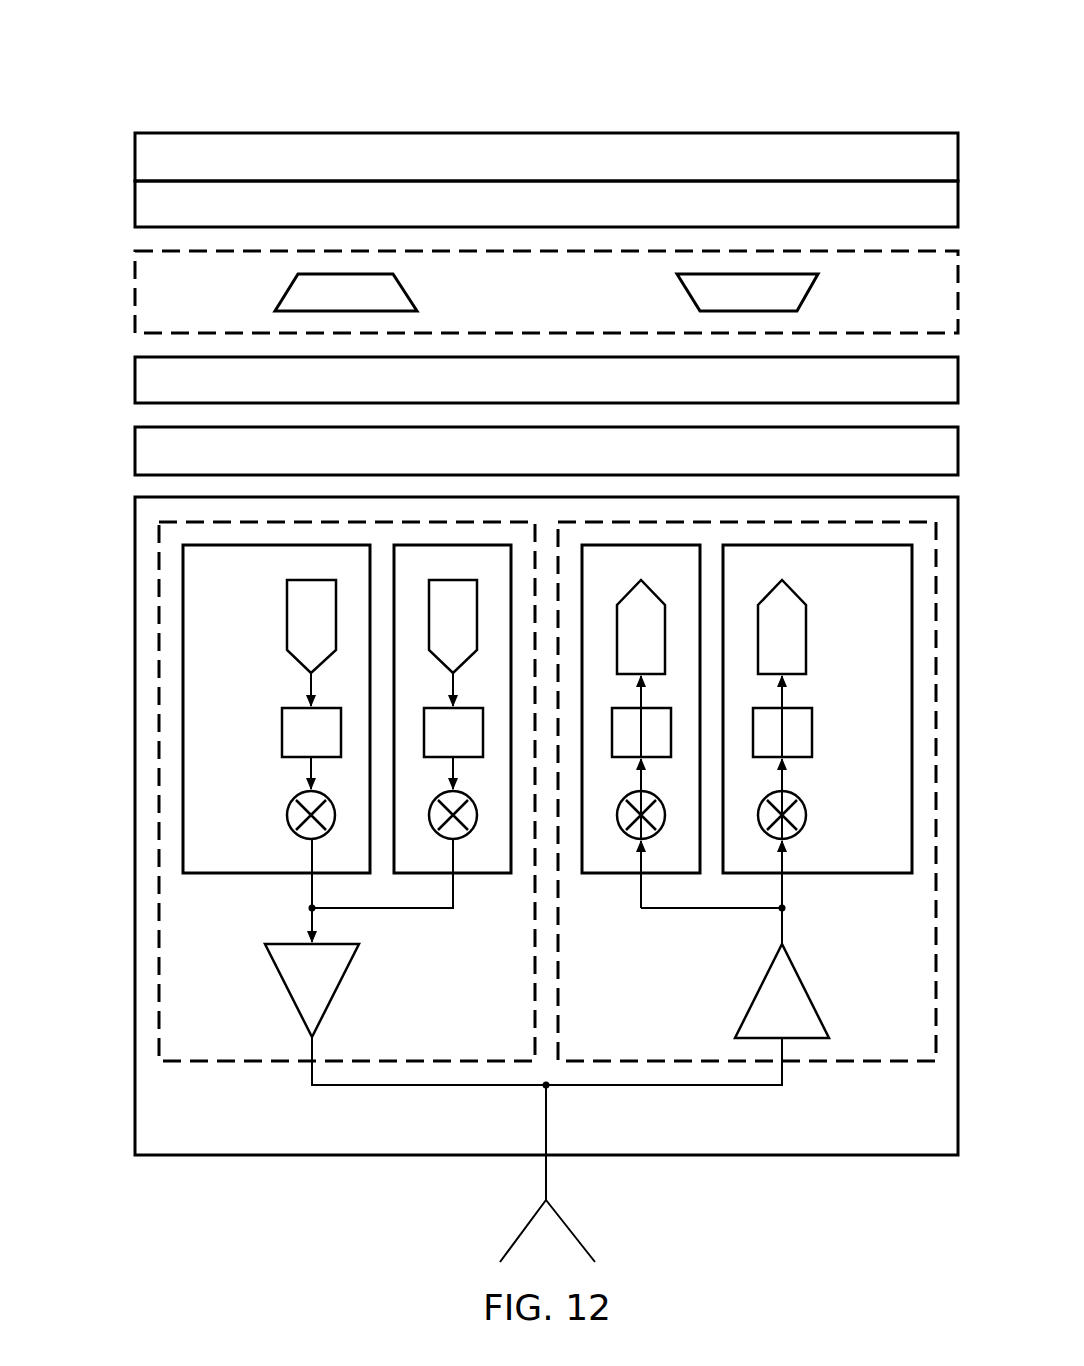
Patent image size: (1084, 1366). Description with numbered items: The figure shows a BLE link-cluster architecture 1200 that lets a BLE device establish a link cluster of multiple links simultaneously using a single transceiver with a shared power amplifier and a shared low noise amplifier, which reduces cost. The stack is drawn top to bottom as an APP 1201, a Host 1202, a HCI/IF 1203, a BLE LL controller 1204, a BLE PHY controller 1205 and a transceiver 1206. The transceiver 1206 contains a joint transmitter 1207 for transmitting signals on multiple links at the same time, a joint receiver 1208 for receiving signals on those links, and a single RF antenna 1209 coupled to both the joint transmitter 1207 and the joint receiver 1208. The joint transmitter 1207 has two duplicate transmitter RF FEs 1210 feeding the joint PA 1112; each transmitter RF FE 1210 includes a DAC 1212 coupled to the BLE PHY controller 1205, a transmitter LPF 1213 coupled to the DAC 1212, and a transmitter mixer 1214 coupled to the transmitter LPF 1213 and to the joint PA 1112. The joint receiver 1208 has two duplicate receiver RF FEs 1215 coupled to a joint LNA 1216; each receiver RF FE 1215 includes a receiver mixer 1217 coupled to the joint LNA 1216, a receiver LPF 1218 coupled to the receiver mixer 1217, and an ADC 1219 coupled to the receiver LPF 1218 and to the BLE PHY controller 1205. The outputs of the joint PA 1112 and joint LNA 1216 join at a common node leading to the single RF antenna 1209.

The BLE link-cluster architecture 1200 is at (366, 74).
The APP 1201 is at (135, 156).
The Host 1202 is at (135, 204).
The HCI/IF 1203 is at (123, 253).
The BLE LL controller 1204 is at (135, 380).
The BLE PHY controller 1205 is at (135, 451).
The transceiver 1206 is at (340, 1160).
The joint transmitter 1207 is at (222, 1065).
The joint receiver 1208 is at (872, 1065).
The single RF antenna 1209 is at (572, 1228).
The transmitter RF FE 1210 is at (245, 877).
The DAC 1212 is at (287, 622).
The transmitter LPF 1213 is at (282, 733).
The transmitter mixer 1214 is at (287, 815).
The receiver RF FE 1215 is at (622, 877).
The joint LNA 1216 is at (757, 990).
The receiver mixer 1217 is at (806, 815).
The receiver LPF 1218 is at (812, 733).
The ADC 1219 is at (806, 625).
The power amplifier (PA) 1112 is at (287, 993).